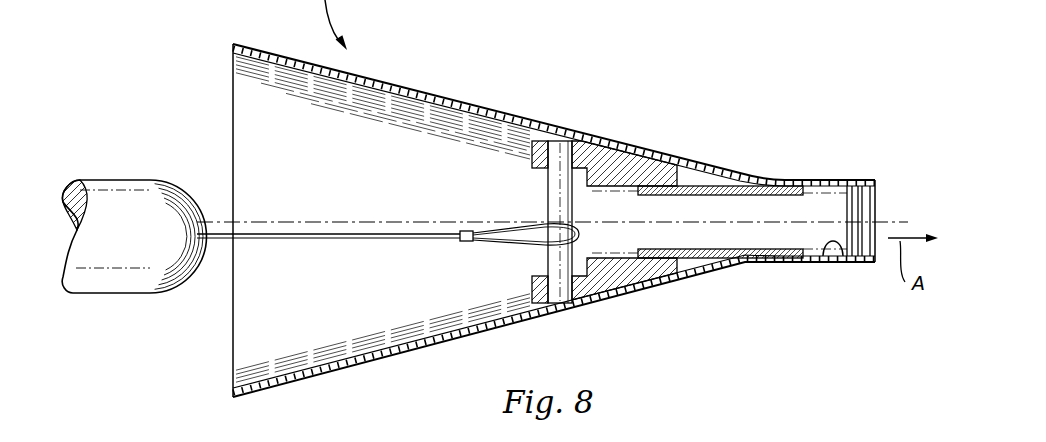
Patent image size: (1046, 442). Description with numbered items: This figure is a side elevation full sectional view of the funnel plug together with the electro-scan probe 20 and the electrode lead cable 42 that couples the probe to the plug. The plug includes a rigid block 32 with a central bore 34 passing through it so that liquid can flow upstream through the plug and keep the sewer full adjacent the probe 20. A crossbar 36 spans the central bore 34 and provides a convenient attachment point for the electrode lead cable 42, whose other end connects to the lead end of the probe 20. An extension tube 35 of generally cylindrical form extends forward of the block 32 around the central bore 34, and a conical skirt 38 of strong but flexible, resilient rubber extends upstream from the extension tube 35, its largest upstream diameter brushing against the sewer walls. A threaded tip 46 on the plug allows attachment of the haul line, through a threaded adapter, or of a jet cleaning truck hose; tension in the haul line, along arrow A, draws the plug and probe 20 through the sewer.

The electro-scan probe 20 is at (132, 200).
The electrode lead cable 42 is at (291, 243).
The skirt 38 is at (433, 95).
The rigid block 32 is at (617, 167).
The crossbar 36 is at (560, 188).
The central bore 34 is at (730, 237).
The extension tube 35 is at (840, 262).
The threaded tip 46 is at (867, 207).